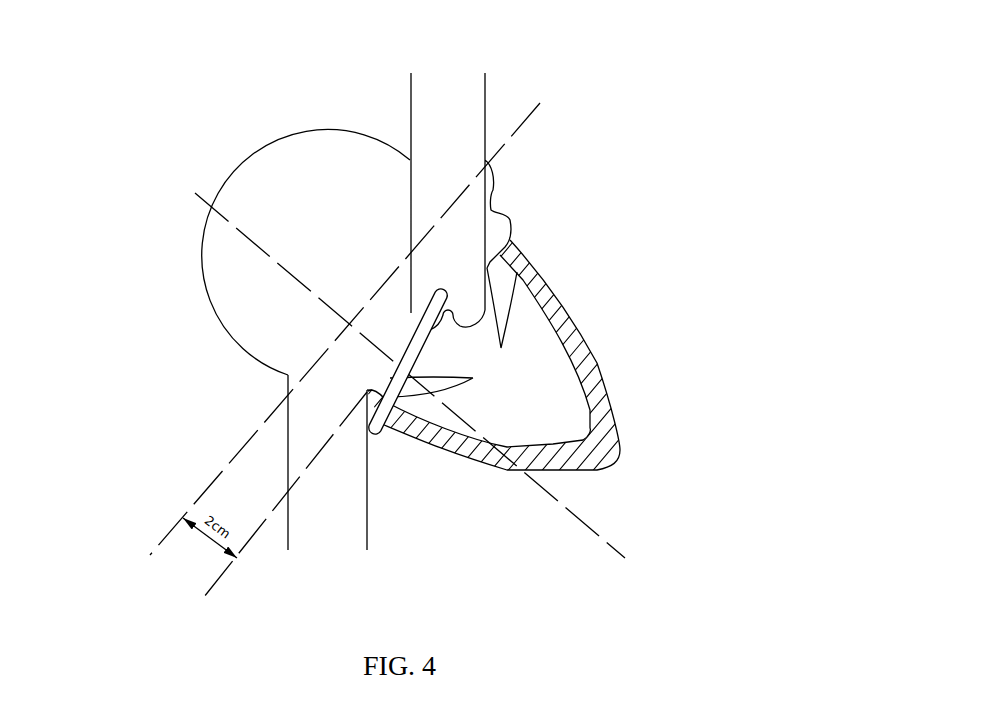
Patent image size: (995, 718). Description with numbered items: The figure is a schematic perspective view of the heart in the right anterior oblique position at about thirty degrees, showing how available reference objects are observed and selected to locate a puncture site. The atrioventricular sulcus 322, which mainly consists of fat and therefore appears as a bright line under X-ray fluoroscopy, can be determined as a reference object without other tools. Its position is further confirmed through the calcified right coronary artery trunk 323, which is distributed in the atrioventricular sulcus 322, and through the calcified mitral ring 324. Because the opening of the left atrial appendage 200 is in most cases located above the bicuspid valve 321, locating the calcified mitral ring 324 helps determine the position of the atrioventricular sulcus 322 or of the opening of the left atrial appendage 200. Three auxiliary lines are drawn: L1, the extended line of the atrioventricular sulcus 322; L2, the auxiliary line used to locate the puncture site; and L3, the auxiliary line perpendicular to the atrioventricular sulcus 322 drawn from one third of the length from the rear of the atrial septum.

The left atrial appendage 200 is at (494, 177).
The bicuspid valve 321 is at (432, 386).
The atrioventricular sulcus 322 is at (383, 378).
The right coronary artery trunk 323 is at (420, 325).
The calcified mitral ring 324 is at (487, 268).
The extended line of the atrioventricular sulcus L1 is at (255, 536).
The auxiliary line used to locate the puncture site L2 is at (213, 483).
The auxiliary line perpendicular to the atrioventricular sulcus L3 is at (237, 232).